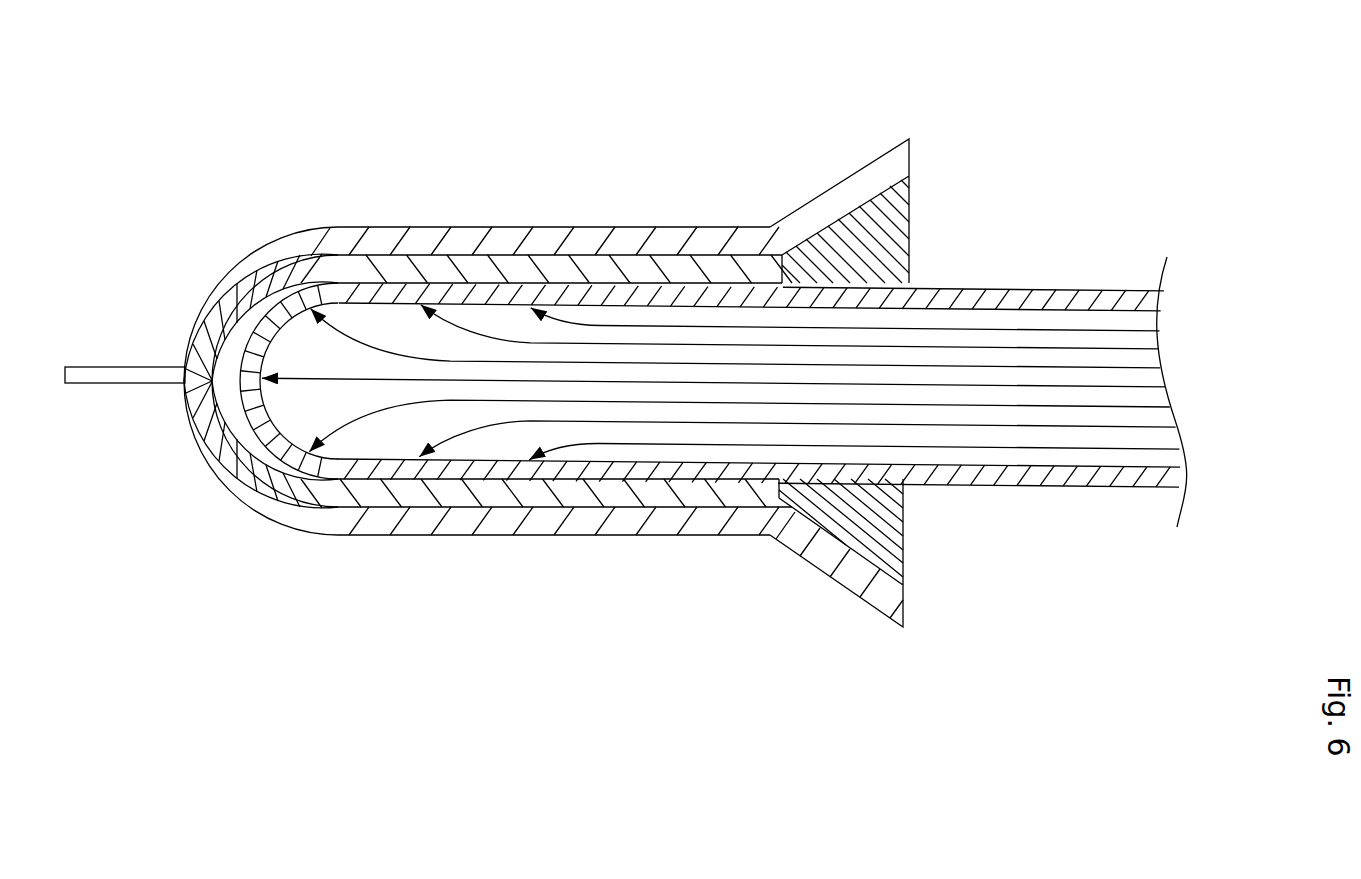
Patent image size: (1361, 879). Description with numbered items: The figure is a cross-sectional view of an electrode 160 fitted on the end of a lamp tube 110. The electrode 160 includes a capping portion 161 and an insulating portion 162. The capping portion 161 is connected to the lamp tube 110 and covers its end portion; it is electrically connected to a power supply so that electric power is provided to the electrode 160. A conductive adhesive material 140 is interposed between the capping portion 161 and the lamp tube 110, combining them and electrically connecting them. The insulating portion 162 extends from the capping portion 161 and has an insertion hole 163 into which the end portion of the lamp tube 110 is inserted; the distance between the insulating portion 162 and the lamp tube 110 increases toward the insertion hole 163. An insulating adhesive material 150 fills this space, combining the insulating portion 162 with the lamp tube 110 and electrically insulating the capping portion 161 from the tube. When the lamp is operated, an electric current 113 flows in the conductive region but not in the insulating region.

The lamp tube 110 is at (1032, 287).
The electric current 113 is at (1188, 328).
The conductive adhesive material 140 is at (508, 487).
The insulating adhesive material 150 is at (909, 243).
The electrode 160 is at (253, 247).
The capping portion 161 is at (513, 247).
The insulating portion 162 is at (830, 200).
The insertion hole 163 is at (909, 180).